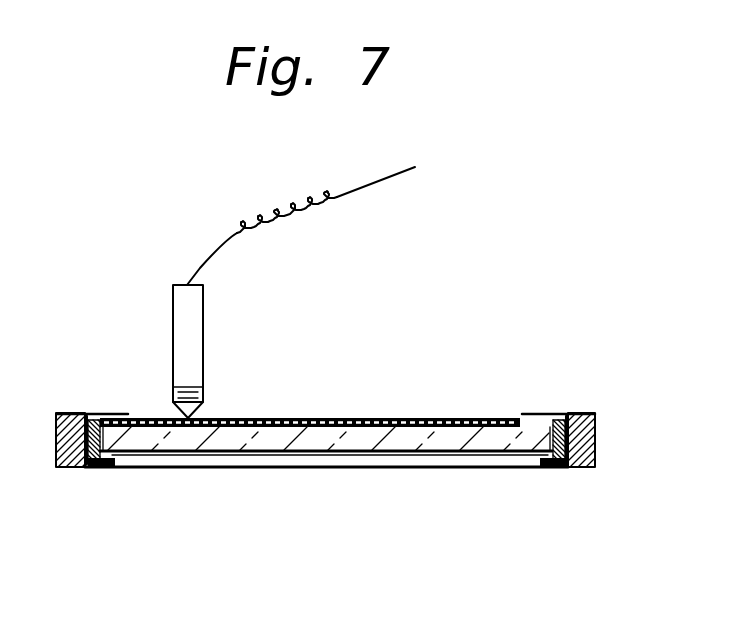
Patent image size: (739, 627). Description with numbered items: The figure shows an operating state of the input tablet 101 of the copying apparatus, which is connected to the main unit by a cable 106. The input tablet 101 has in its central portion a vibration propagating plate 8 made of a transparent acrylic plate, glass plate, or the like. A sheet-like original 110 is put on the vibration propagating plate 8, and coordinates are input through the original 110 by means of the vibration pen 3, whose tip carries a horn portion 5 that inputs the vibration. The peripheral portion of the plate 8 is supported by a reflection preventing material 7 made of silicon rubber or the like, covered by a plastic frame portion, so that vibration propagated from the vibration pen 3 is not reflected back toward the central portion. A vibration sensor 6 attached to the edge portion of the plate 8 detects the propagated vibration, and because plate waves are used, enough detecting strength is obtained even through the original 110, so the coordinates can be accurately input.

The cable 106 is at (288, 212).
The vibration pen 3 is at (203, 308).
The horn portion 5 is at (197, 415).
The sheet-like original 110 is at (350, 418).
The input tablet 101 is at (447, 478).
The vibration propagating plate 8 is at (508, 453).
The reflection preventing material 7 is at (90, 415).
The vibration sensor 6 is at (93, 467).